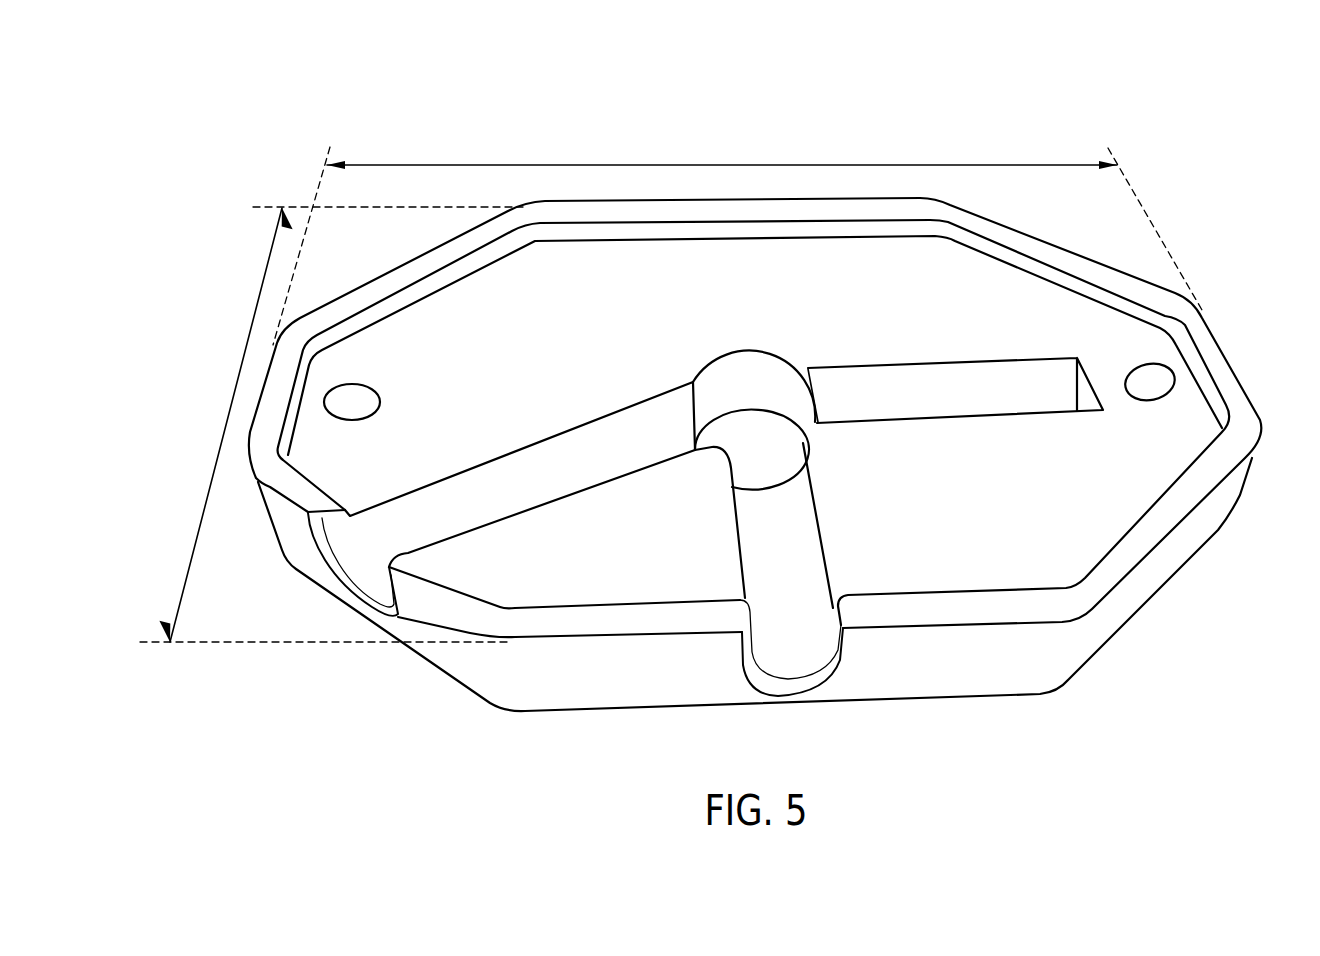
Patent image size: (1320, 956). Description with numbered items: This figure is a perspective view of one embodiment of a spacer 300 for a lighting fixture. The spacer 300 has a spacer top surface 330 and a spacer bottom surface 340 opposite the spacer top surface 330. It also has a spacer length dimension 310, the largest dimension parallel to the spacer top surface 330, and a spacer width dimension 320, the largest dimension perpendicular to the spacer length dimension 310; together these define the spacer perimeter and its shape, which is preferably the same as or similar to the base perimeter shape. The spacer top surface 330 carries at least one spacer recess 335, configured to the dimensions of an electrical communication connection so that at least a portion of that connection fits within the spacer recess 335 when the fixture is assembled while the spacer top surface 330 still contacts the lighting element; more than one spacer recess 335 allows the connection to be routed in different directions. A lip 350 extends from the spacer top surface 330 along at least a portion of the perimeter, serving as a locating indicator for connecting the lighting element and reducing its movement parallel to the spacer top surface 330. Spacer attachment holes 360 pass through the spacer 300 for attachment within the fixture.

The spacer 300 is at (279, 120).
The spacer length dimension 310 is at (703, 163).
The spacer width dimension 320 is at (230, 398).
The spacer top surface 330 is at (982, 278).
The spacer recess 335 is at (1082, 356).
The spacer bottom surface 340 is at (1002, 697).
The lip 350 is at (648, 233).
The spacer attachment hole 360 is at (357, 400).